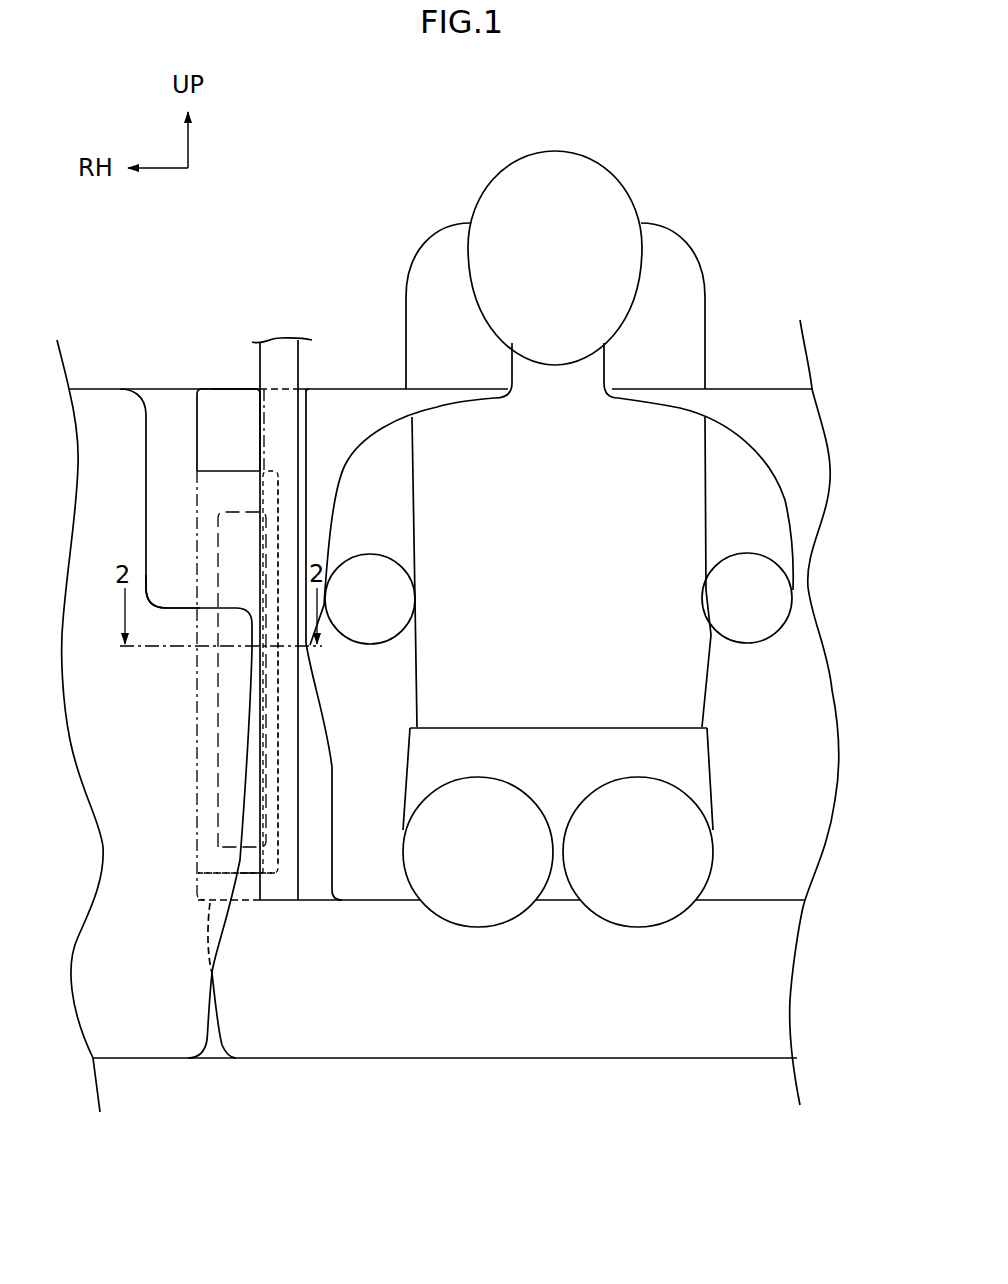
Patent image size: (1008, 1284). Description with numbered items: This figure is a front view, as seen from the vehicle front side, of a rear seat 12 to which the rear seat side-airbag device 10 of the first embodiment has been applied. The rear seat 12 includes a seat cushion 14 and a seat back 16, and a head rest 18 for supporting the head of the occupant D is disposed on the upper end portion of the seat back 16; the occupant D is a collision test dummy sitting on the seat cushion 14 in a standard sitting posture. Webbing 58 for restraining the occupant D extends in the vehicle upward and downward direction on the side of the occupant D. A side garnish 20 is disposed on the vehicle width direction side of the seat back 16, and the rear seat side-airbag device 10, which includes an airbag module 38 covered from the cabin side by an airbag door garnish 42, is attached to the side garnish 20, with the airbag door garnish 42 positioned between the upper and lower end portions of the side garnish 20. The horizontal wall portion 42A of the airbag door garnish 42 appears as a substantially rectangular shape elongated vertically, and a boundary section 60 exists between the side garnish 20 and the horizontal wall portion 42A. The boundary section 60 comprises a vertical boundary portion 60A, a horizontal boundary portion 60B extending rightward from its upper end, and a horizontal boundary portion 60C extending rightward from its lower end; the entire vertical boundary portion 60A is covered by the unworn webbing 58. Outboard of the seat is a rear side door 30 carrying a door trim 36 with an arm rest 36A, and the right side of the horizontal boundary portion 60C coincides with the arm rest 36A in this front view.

The rear seat side-airbag device 10 is at (214, 387).
The rear seat 12 is at (750, 387).
The seat cushion 14 is at (690, 1060).
The seat back 16 is at (800, 840).
The head rest 18 is at (690, 254).
The side garnish 20 is at (239, 389).
The rear side door 30 is at (154, 695).
The door trim 36 is at (88, 387).
The arm rest 36A is at (180, 606).
The airbag module 38 is at (226, 506).
The airbag door garnish 42 is at (308, 631).
The horizontal wall portion 42A is at (246, 490).
The webbing 58 is at (300, 366).
The boundary section 60 is at (300, 685).
The vertical boundary portion 60A is at (278, 720).
The horizontal boundary portion 60B is at (233, 470).
The horizontal boundary portion 60C is at (247, 875).
The occupant D is at (494, 177).